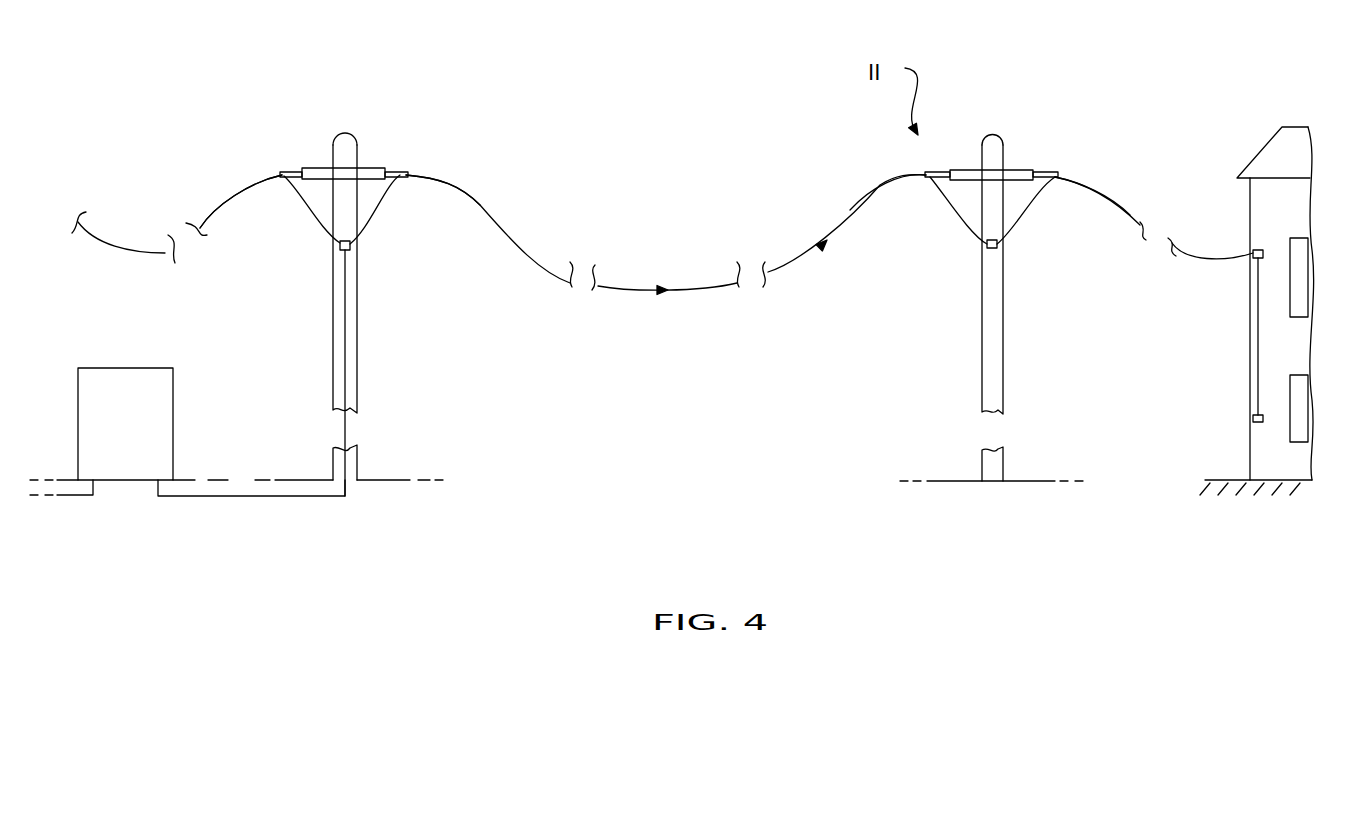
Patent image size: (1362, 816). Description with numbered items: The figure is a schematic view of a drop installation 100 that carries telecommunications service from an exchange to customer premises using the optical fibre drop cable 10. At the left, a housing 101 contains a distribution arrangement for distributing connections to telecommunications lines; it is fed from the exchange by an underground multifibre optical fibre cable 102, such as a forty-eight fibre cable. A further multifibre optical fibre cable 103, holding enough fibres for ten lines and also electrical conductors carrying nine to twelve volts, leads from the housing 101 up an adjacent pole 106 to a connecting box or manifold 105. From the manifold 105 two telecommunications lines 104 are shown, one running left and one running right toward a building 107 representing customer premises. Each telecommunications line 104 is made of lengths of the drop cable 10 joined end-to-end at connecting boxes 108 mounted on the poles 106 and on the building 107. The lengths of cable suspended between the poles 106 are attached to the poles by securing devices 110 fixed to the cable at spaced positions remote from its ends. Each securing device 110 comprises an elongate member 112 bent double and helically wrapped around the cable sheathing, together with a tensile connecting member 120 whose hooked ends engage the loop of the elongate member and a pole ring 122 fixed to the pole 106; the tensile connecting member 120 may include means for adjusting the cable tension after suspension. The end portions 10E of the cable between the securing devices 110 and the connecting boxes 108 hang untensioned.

The optical fibre drop cable 10 is at (220, 215).
The end portions of the cable 10E is at (323, 238).
The drop installation 100 is at (707, 155).
The housing 101 is at (120, 368).
The multifibre optical fibre cable 102 is at (82, 497).
The multifibre optical fibre cable 103 is at (280, 497).
The telecommunications line 104 is at (191, 268).
The manifold 105 is at (350, 250).
The pole 106 is at (357, 357).
The building 107 is at (1255, 460).
The connecting box 108 is at (1000, 250).
The securing device 110 is at (690, 173).
The elongate member 112 is at (235, 190).
The tensile connecting member 120 is at (287, 172).
The pole ring 122 is at (370, 168).